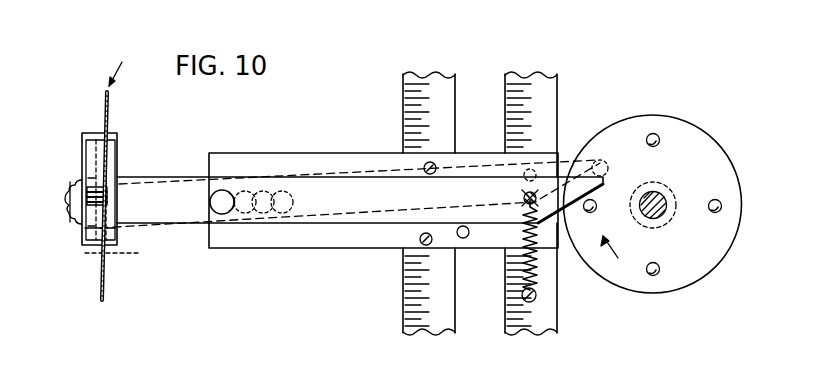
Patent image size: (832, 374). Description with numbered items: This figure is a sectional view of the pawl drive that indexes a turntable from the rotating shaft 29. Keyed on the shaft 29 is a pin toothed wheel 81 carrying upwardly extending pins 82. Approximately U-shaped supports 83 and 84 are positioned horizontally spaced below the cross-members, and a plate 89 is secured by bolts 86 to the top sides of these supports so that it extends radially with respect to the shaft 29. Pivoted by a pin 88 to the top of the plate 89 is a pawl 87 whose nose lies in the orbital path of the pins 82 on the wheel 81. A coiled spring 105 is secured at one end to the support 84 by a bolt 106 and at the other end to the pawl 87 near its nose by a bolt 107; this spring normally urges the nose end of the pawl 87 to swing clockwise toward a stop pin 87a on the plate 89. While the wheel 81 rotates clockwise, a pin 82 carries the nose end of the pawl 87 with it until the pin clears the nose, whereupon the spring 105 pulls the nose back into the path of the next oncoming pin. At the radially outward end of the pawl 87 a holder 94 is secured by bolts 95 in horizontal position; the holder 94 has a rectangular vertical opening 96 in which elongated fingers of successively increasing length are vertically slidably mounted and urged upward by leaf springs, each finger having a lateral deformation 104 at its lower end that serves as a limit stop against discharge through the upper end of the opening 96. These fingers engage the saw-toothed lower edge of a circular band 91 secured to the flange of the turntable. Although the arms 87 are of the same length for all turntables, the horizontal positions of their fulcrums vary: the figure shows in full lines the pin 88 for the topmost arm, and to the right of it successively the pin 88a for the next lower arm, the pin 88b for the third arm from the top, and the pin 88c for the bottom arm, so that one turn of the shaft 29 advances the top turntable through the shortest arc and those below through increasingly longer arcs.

The shaft 29 is at (661, 216).
The pin toothed wheel 81 is at (686, 282).
The pins 82 is at (602, 164).
The U-shaped support 83 is at (440, 72).
The U-shaped support 84 is at (528, 83).
The bolts 86 is at (428, 246).
The pawl 87 is at (347, 172).
The stop pin 87a is at (464, 239).
The pin 88 is at (218, 213).
The pin 88a is at (242, 214).
The pin 88b is at (262, 214).
The pin 88c is at (283, 214).
The plate 89 is at (340, 240).
The circular band 91 is at (108, 101).
The holder 94 is at (117, 242).
The bolts 95 is at (68, 215).
The rectangular vertical opening 96 is at (108, 197).
The lateral deformation 104 is at (95, 228).
The coiled spring 105 is at (540, 266).
The bolt 106 is at (531, 303).
The bolt 107 is at (523, 198).